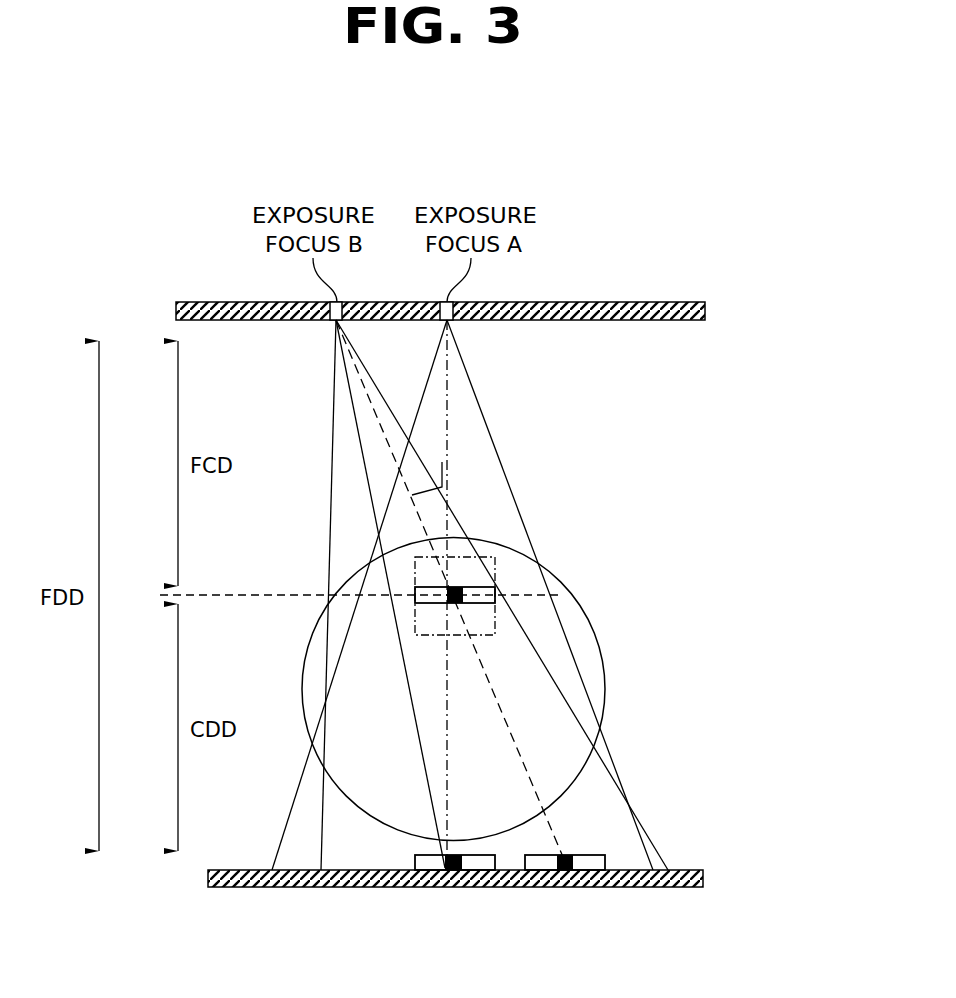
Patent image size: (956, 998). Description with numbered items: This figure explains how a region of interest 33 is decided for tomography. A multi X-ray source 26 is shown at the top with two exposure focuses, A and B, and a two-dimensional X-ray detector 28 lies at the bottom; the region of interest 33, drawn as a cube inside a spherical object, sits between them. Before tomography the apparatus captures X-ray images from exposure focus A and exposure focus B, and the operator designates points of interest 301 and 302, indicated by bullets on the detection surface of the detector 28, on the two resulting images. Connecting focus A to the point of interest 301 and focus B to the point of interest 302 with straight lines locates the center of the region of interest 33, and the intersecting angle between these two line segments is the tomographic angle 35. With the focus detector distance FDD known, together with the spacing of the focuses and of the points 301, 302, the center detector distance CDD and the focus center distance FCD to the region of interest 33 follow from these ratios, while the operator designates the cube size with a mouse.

The multi X-ray source 26 is at (707, 311).
The two-dimensional X-ray detector 28 is at (706, 878).
The region of interest 33 is at (495, 591).
The tomographic angle 35 is at (442, 462).
The point of interest 301 is at (454, 887).
The point of interest 302 is at (563, 887).